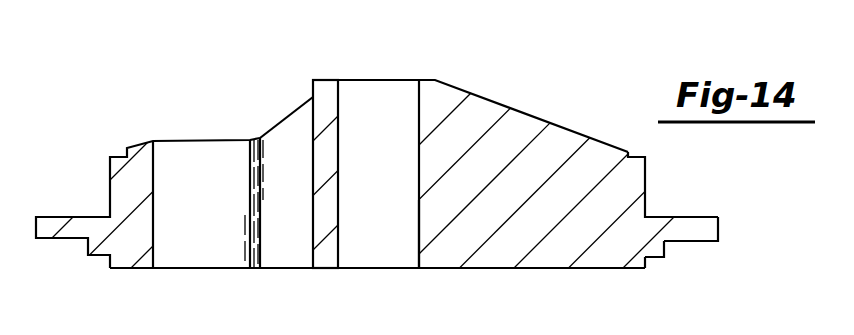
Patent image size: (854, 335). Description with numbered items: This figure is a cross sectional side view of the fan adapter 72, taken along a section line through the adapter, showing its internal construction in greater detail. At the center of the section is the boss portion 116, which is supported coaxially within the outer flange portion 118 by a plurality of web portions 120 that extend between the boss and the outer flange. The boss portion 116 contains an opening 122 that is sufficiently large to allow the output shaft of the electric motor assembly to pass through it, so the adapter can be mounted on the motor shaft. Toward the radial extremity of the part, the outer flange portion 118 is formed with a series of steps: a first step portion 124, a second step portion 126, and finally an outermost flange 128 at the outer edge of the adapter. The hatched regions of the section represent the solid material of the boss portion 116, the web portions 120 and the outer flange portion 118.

The fan adapter 72 is at (88, 161).
The boss portion 116 is at (327, 92).
The outer flange portion 118 is at (690, 208).
The web portions 120 is at (281, 138).
The opening 122 is at (420, 236).
The first step portion 124 is at (646, 268).
The second step portion 126 is at (666, 249).
The outermost flange 128 is at (717, 233).